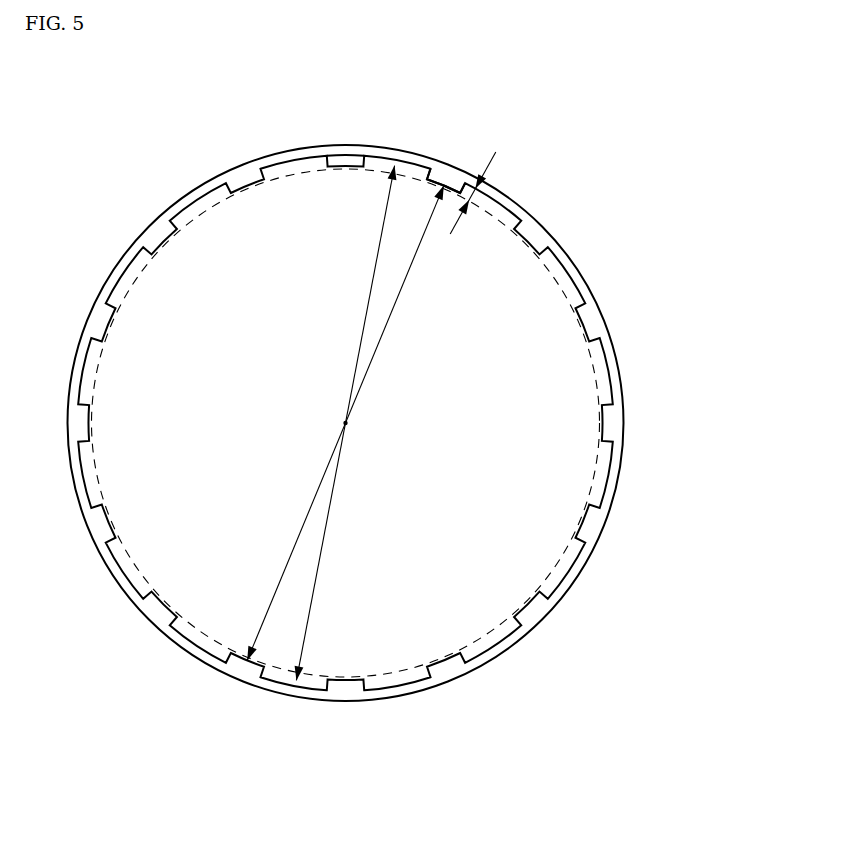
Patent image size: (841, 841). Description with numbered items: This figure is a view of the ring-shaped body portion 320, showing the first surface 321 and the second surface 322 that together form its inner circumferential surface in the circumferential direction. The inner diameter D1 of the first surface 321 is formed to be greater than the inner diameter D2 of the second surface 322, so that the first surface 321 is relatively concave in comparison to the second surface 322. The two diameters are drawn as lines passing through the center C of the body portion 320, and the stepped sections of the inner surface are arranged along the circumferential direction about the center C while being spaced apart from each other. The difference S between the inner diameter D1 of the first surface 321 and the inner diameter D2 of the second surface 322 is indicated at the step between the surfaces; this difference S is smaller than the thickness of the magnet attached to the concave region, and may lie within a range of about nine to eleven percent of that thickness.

The body portion 320 is at (625, 400).
The first surface 321 is at (383, 157).
The second surface 322 is at (428, 190).
The difference between inner diameters S is at (495, 185).
The center C is at (346, 423).
The inner diameter of the first surface D1 is at (307, 622).
The inner diameter of the second surface D2 is at (272, 602).